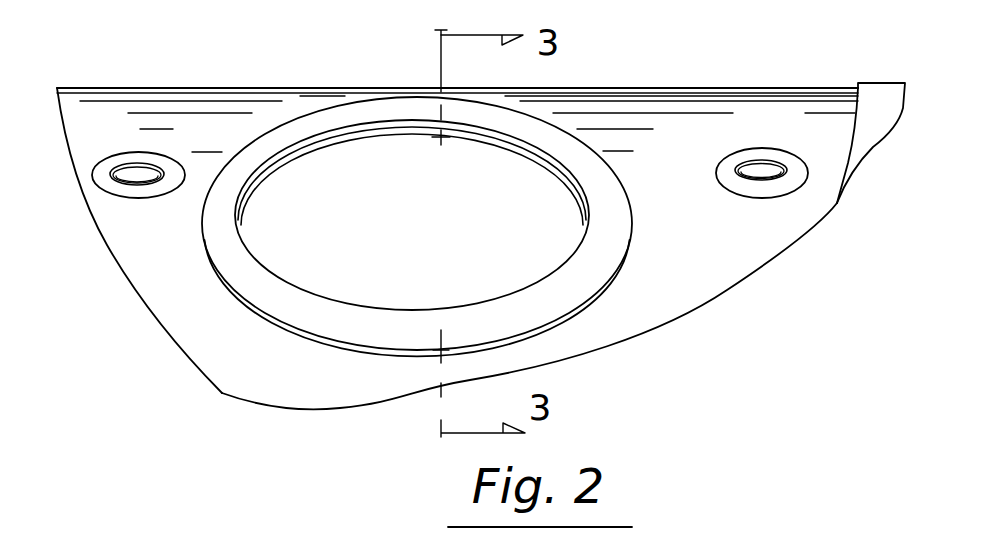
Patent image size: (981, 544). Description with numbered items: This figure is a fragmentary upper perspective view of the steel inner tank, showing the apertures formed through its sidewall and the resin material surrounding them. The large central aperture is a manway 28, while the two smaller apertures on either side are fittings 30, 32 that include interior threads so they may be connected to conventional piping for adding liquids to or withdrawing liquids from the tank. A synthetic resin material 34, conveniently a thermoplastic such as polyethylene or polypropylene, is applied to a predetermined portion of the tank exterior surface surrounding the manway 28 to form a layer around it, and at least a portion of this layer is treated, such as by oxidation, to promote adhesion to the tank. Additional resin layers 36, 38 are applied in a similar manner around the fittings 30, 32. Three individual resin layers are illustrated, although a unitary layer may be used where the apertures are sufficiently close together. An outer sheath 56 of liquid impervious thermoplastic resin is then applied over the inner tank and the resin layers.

The manway 28 is at (487, 147).
The fitting 30 is at (158, 168).
The fitting 32 is at (765, 162).
The synthetic resin material 34 is at (308, 129).
The resin layer 36 is at (123, 196).
The resin layer 38 is at (718, 172).
The outer sheath 56 is at (868, 87).